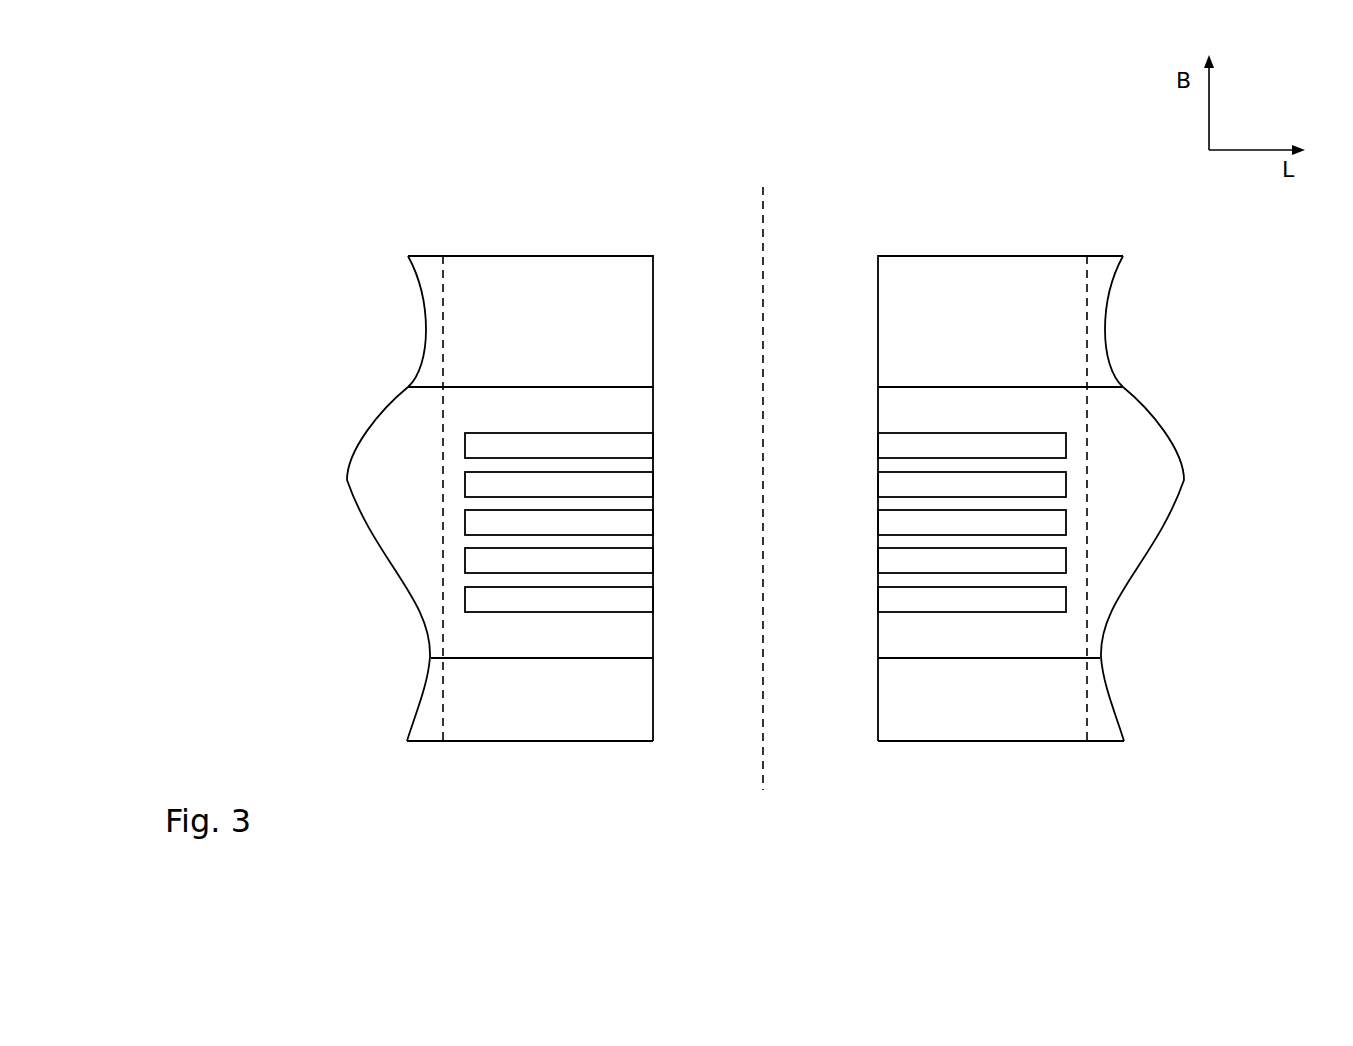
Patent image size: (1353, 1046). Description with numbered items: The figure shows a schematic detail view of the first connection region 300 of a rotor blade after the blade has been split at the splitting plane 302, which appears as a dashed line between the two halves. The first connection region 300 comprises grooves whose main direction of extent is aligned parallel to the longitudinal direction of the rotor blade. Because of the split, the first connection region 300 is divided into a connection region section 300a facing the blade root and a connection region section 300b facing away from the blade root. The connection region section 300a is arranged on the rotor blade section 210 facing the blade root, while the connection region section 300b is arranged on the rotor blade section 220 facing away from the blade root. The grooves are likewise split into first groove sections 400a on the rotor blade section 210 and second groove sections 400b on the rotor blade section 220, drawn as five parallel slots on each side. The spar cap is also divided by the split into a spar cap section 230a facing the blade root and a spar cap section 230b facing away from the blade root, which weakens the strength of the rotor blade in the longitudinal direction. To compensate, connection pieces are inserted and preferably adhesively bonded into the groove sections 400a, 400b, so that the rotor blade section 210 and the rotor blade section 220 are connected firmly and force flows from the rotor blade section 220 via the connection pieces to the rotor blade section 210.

The first connection region 300 is at (656, 154).
The connection region section facing the blade root 300a is at (510, 300).
The connection region section facing away from the blade root 300b is at (1033, 290).
The splitting plane 302 is at (763, 220).
The first groove sections 400a is at (598, 424).
The second groove sections 400b is at (914, 424).
The spar cap section facing the blade root 230a is at (605, 630).
The spar cap section facing away from the blade root 230b is at (993, 635).
The rotor blade section facing the blade root 210 is at (359, 638).
The rotor blade section facing away from the blade root 220 is at (1138, 334).